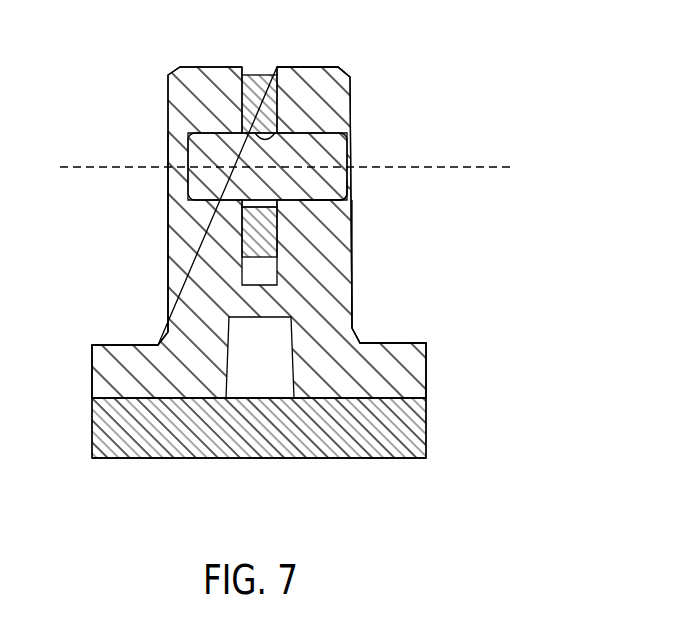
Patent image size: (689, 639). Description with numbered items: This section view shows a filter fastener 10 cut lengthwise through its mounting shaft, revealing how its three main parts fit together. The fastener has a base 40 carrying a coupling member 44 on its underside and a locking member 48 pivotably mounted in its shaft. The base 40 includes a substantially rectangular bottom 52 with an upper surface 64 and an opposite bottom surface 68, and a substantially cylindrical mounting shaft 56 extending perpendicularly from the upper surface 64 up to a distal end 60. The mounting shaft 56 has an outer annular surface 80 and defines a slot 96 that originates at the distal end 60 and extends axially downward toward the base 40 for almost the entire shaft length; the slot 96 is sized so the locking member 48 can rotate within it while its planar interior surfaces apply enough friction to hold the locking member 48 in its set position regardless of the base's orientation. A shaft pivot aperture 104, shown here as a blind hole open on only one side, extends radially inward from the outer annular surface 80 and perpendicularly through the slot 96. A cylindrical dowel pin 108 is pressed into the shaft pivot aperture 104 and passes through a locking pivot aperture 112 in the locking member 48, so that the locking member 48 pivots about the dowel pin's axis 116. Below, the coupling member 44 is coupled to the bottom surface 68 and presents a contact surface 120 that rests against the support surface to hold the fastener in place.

The filter fastener 10 is at (512, 109).
The base 40 is at (342, 292).
The coupling member 44 is at (417, 426).
The locking member 48 is at (259, 75).
The bottom 52 is at (417, 363).
The mounting shaft 56 is at (343, 238).
The distal end 60 is at (313, 70).
The upper surface 64 is at (122, 336).
The bottom surface 68 is at (157, 407).
The outer annular surface 80 is at (160, 194).
The slot 96 is at (246, 67).
The shaft pivot aperture 104 is at (343, 148).
The dowel pin 108 is at (344, 188).
The locking pivot aperture 112 is at (270, 137).
The dowel pin's axis 116 is at (468, 161).
The contact surface 120 is at (332, 466).